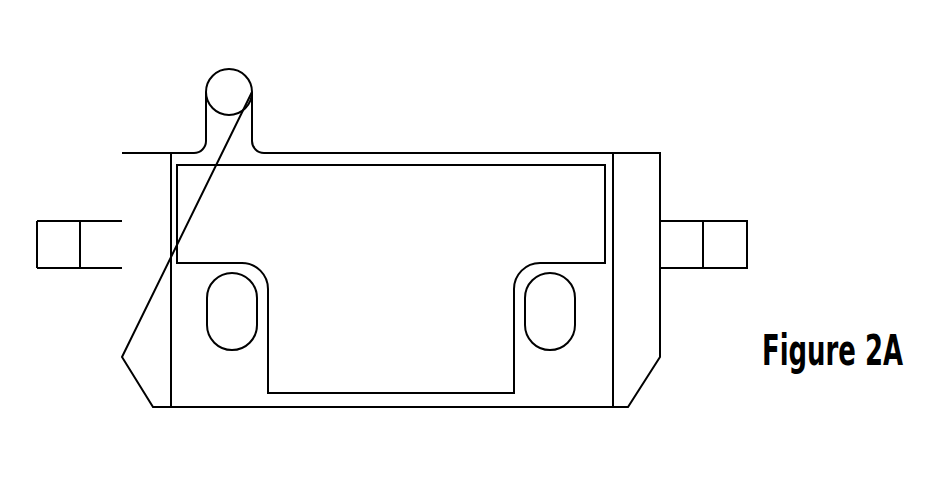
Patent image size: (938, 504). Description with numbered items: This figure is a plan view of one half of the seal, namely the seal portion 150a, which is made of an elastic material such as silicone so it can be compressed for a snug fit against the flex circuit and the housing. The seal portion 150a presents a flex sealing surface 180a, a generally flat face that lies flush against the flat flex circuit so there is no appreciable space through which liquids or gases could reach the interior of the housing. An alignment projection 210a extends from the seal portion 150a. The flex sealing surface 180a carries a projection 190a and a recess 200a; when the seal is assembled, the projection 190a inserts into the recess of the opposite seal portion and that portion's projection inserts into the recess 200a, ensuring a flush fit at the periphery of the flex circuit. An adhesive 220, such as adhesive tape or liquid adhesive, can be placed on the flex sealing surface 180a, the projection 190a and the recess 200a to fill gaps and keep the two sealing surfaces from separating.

The flex sealing surface 180a is at (500, 153).
The alignment projection 210a is at (229, 69).
The seal portion 150a is at (380, 118).
The recess 200a is at (229, 350).
The projection 190a is at (547, 350).
The adhesive 220 is at (383, 368).